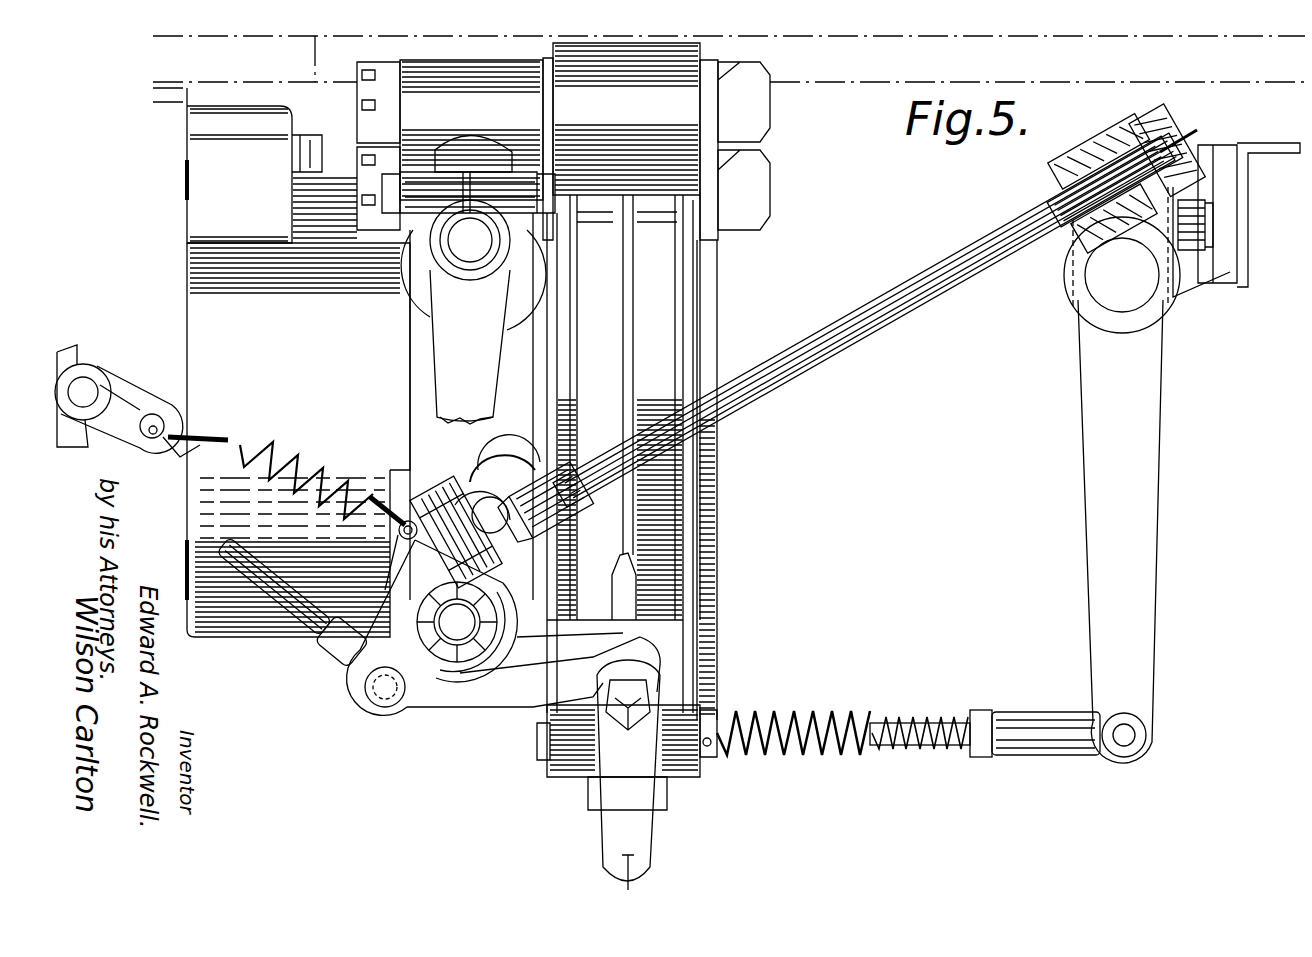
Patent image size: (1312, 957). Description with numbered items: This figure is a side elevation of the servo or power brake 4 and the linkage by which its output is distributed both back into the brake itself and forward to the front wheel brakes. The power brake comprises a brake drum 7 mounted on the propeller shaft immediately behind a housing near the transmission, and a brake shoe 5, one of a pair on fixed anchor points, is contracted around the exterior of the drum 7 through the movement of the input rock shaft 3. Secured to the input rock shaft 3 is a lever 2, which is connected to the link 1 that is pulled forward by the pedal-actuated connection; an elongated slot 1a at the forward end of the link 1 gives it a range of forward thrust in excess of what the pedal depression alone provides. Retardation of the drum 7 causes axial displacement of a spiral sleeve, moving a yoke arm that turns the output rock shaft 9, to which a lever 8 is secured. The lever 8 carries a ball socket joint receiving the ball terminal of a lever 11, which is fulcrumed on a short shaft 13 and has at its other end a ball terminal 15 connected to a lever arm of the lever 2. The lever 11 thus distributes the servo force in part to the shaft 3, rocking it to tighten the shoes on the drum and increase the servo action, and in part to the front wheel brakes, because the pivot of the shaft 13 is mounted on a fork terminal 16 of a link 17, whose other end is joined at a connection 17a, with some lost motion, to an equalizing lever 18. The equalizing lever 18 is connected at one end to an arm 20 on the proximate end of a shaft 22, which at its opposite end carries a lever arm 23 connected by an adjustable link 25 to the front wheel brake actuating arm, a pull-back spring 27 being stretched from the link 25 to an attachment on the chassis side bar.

The link 1 is at (290, 595).
The slot 1a is at (120, 412).
The lever 2 is at (420, 680).
The input rock shaft 3 is at (458, 628).
The servo or power brake 4 is at (632, 176).
The brake shoe 5 is at (668, 290).
The brake drum 7 is at (715, 495).
The lever 8 is at (478, 337).
The output rock shaft 9 is at (482, 253).
The lever 11 is at (498, 470).
The short shaft 13 is at (428, 497).
The ball terminal 15 is at (415, 510).
The fork terminal 16 is at (480, 480).
The link 17 is at (920, 300).
The connection 17a is at (1128, 150).
The equalizing lever 18 is at (1065, 175).
The arm 20 is at (1080, 230).
The shaft 22 is at (1110, 275).
The lever arm 23 is at (1115, 483).
The adjustable link 25 is at (937, 725).
The pull-back spring 27 is at (820, 712).